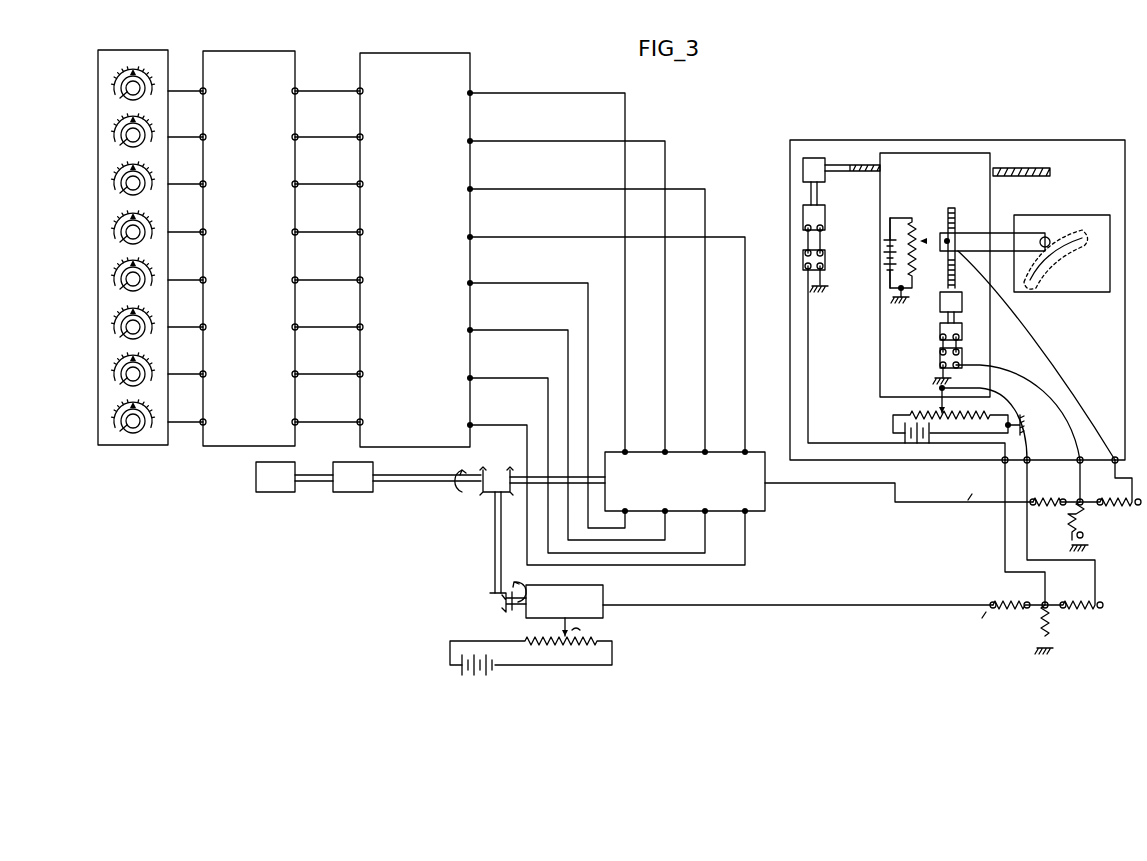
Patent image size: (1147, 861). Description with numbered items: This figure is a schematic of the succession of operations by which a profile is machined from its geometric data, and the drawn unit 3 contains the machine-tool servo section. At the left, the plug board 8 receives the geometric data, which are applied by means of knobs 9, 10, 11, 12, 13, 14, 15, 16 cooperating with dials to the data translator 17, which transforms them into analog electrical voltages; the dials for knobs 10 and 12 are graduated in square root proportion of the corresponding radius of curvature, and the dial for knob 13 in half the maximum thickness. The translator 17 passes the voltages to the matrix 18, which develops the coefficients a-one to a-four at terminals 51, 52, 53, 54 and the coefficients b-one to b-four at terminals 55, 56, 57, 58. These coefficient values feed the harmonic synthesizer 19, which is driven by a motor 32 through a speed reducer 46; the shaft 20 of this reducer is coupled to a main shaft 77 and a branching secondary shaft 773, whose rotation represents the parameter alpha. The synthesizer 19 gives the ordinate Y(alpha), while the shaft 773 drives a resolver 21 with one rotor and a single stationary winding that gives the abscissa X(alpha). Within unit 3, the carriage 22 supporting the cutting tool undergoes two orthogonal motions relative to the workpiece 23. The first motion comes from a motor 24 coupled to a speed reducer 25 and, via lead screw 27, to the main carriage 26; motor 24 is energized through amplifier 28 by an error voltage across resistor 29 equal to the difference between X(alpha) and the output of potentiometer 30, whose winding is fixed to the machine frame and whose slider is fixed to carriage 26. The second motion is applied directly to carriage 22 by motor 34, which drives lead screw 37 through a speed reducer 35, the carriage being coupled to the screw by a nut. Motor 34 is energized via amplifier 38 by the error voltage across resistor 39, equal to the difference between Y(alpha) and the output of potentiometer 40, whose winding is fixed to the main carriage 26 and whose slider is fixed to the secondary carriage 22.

The servo indicator unit 3 is at (1125, 316).
The plug board 8 is at (152, 59).
The knob 9 is at (120, 95).
The knob 10 is at (120, 143).
The knob 11 is at (120, 191).
The knob 12 is at (120, 240).
The knob 13 is at (120, 287).
The knob 14 is at (120, 335).
The knob 15 is at (120, 382).
The knob 16 is at (120, 429).
The data translator 17 is at (248, 60).
The matrix 18 is at (420, 62).
The harmonic synthesizer 19 is at (765, 490).
The shaft 20 is at (435, 482).
The resolver 21 is at (600, 591).
The carriage 22 is at (1001, 234).
The workpiece 23 is at (1062, 253).
The motor 24 is at (820, 222).
The speed reducer 25 is at (820, 180).
The carriage 26 is at (975, 166).
The lead screw 27 is at (851, 165).
The amplifier 28 is at (826, 262).
The resistor 29 is at (1049, 630).
The potentiometer 30 is at (902, 412).
The motor 32 is at (275, 477).
The motor 34 is at (962, 332).
The speed reducer 35 is at (939, 305).
The lead screw 37 is at (962, 270).
The amplifier 38 is at (938, 360).
The resistor 39 is at (1047, 505).
The potentiometer 40 is at (906, 275).
The speed reducer 46 is at (353, 477).
The terminal 51 is at (556, 263).
The terminal 52 is at (576, 287).
The terminal 53 is at (596, 311).
The terminal 54 is at (616, 335).
The terminal 55 is at (557, 400).
The terminal 56 is at (577, 424).
The terminal 57 is at (597, 454).
The terminal 58 is at (617, 484).
The main shaft 77 is at (514, 474).
The branching secondary shaft 773 is at (497, 548).